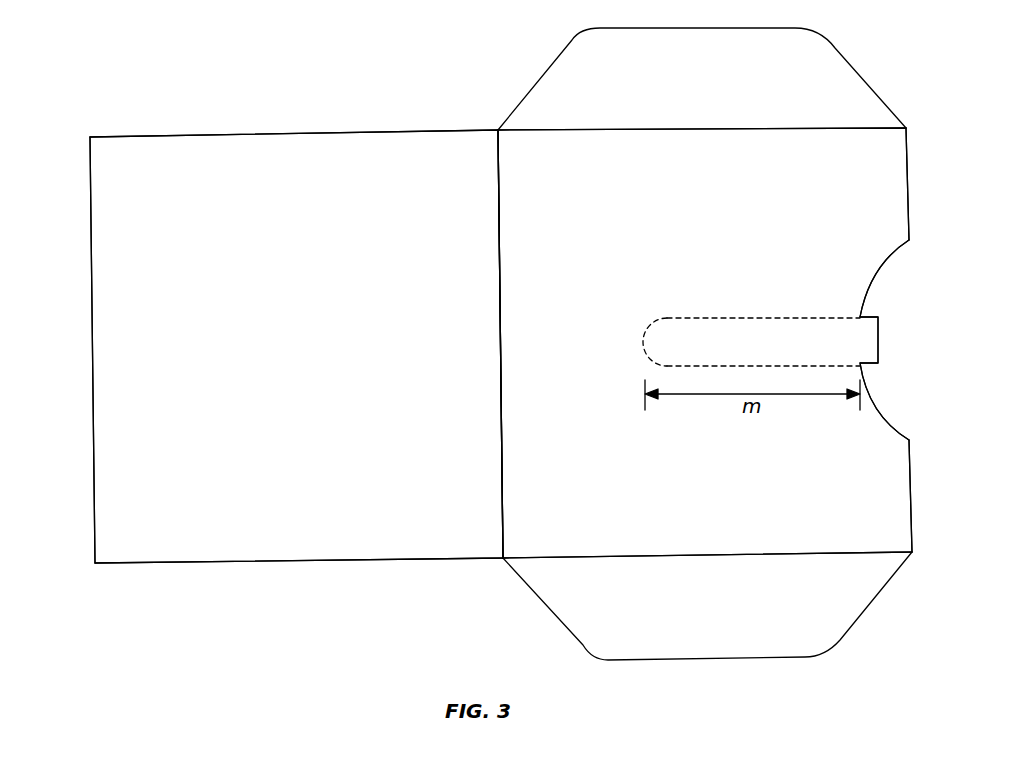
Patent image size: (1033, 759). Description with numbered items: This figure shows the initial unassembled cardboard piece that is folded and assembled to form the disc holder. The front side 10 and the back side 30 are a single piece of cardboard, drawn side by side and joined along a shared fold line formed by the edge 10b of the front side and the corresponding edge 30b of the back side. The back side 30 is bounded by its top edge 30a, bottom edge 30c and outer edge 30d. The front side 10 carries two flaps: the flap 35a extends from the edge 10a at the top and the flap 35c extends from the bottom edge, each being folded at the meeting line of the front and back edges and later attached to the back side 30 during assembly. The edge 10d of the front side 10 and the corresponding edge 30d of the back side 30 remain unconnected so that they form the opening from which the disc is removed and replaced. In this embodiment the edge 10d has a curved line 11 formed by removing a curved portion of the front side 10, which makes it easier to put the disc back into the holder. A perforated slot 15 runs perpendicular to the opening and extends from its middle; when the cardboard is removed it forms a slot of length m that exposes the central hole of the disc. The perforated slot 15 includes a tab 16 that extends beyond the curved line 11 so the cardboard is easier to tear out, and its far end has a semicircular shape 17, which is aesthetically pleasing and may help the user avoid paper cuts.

The front side 10 is at (807, 155).
The edge of front side 10a is at (607, 130).
The edge of front side 10b is at (501, 418).
The edge of front side 10d is at (910, 492).
The curved line 11 is at (876, 280).
The perforated slot 15 is at (697, 318).
The tab 16 is at (865, 360).
The semicircular shape 17 is at (648, 340).
The back side 30 is at (393, 143).
The edge of back side 30a is at (278, 133).
The edge of back side 30b is at (499, 343).
The edge of back side 30c is at (285, 562).
The edge of back side 30d is at (91, 340).
The flap 35a is at (705, 57).
The flap 35c is at (735, 645).